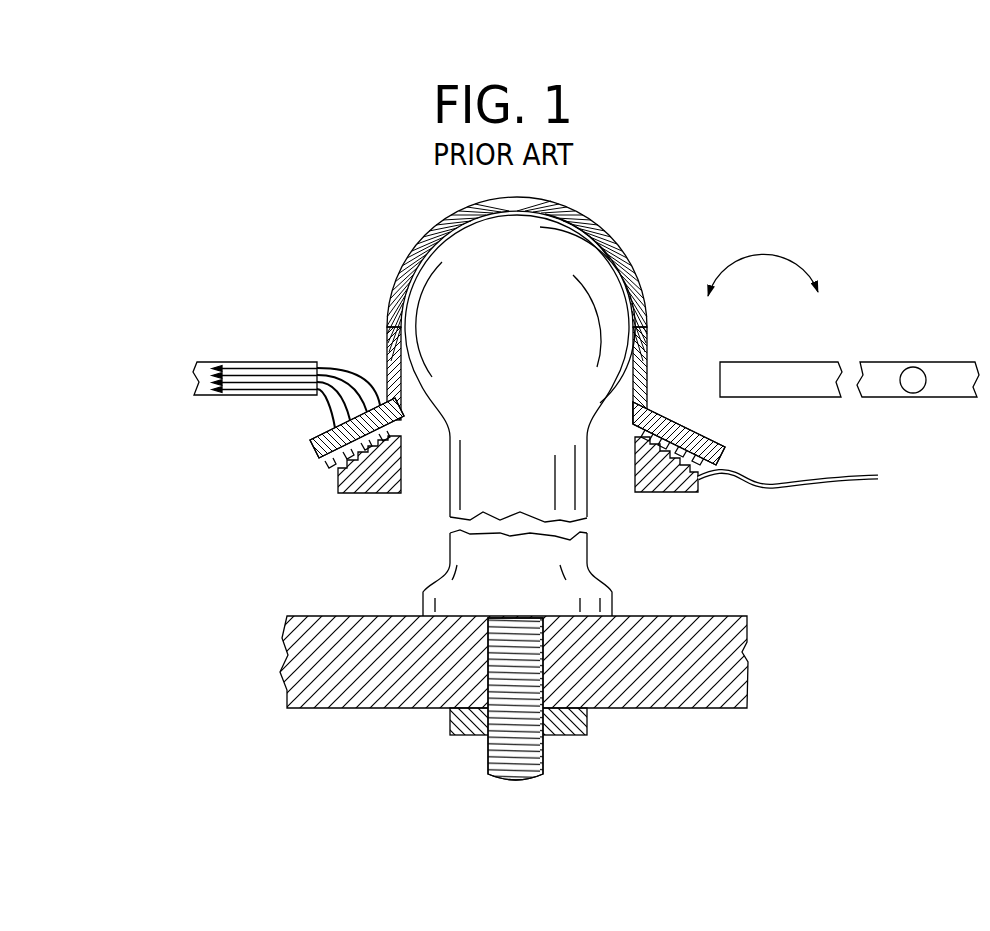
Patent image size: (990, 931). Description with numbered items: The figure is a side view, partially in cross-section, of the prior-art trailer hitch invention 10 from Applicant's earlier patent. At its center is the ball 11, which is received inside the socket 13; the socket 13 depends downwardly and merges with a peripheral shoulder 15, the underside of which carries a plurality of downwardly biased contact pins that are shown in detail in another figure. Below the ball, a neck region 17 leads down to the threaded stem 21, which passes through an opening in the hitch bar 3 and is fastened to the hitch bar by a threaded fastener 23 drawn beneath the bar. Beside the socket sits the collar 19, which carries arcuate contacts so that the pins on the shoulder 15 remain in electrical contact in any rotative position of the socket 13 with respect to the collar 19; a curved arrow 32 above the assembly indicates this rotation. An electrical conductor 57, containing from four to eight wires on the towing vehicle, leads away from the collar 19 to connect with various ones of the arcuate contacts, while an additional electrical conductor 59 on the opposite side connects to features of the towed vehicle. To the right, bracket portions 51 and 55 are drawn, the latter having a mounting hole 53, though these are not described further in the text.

The hitch bar 3 is at (312, 611).
The hitch invention 10 is at (366, 288).
The ball 11 is at (526, 340).
The socket 13 is at (625, 233).
The peripheral shoulder 15 is at (679, 405).
The lamp neck 17 is at (441, 492).
The collar 19 is at (338, 477).
The threaded stem 21 is at (485, 757).
The threaded fastener 23 is at (585, 728).
The rotation direction arrow 32 is at (790, 258).
The bracket plate 51 is at (772, 388).
The mounting hole 53 is at (913, 393).
The bracket plate 55 is at (945, 360).
The electrical conductor 57 is at (818, 490).
The additional electrical conductor 59 is at (213, 360).